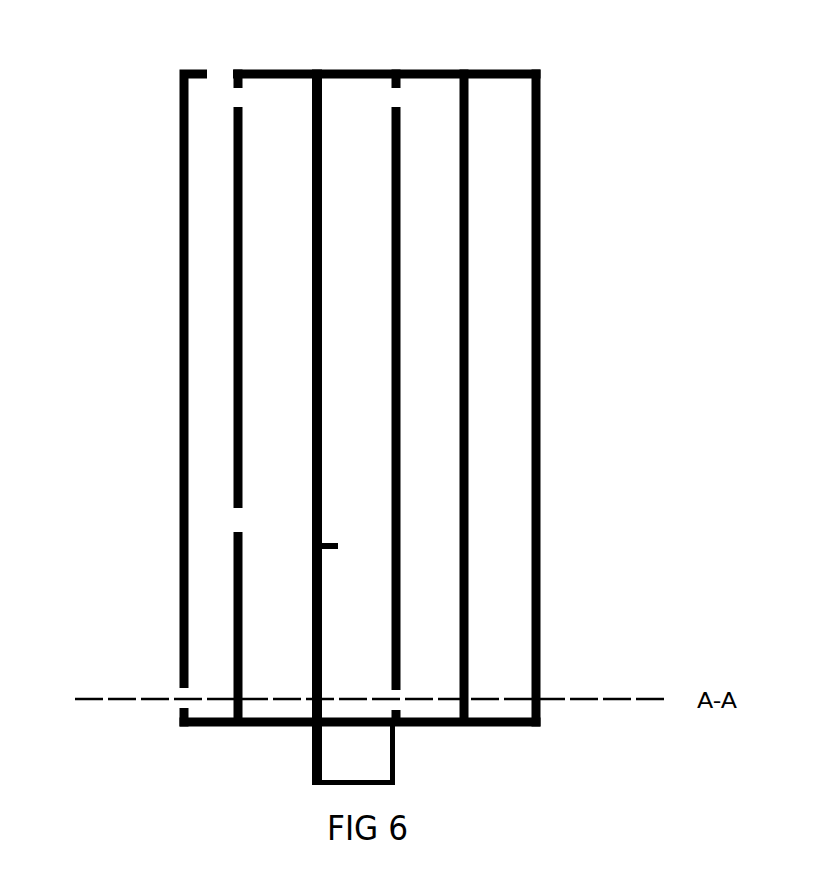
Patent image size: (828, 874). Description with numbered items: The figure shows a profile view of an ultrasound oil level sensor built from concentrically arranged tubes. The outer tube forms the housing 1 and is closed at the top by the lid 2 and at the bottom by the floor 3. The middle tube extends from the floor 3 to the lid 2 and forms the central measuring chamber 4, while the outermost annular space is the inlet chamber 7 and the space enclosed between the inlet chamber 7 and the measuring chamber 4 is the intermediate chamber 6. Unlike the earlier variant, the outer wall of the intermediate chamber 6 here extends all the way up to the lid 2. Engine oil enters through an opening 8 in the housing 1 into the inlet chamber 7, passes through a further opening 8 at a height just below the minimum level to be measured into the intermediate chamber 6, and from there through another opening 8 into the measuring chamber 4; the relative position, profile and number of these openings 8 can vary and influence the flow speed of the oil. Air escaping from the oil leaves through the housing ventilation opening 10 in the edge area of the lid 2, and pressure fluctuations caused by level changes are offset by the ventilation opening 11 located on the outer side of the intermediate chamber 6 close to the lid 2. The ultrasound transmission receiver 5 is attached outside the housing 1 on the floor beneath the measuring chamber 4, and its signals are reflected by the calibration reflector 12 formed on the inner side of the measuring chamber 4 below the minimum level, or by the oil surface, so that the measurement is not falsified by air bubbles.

The housing 1 is at (540, 183).
The lid 2 is at (450, 70).
The floor 3 is at (285, 727).
The measuring chamber 4 is at (350, 277).
The ultrasound transmission receiver 5 is at (355, 755).
The intermediate chamber 6 is at (285, 585).
The inlet chamber 7 is at (205, 617).
The opening 8 is at (233, 520).
The housing ventilation opening 10 is at (218, 70).
The ventilation opening 11 is at (393, 98).
The calibration reflector 12 is at (338, 547).